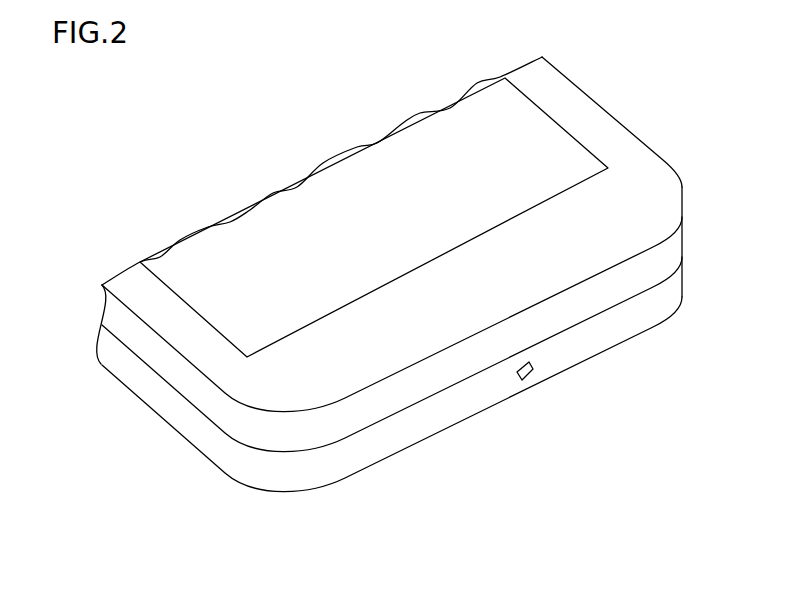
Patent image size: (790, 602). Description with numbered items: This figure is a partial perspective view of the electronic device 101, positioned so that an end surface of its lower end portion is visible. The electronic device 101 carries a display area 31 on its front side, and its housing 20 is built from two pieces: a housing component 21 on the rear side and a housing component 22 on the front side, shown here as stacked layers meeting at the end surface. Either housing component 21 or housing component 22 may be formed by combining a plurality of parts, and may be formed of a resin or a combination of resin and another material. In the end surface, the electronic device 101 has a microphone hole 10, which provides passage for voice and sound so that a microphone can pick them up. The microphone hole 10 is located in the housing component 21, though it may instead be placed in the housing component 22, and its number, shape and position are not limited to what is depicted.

The electronic device 101 is at (389, 260).
The display area 31 is at (224, 263).
The microphone hole 10 is at (522, 380).
The housing 20 is at (389, 339).
The housing component 21 is at (573, 347).
The housing component 22 is at (595, 290).